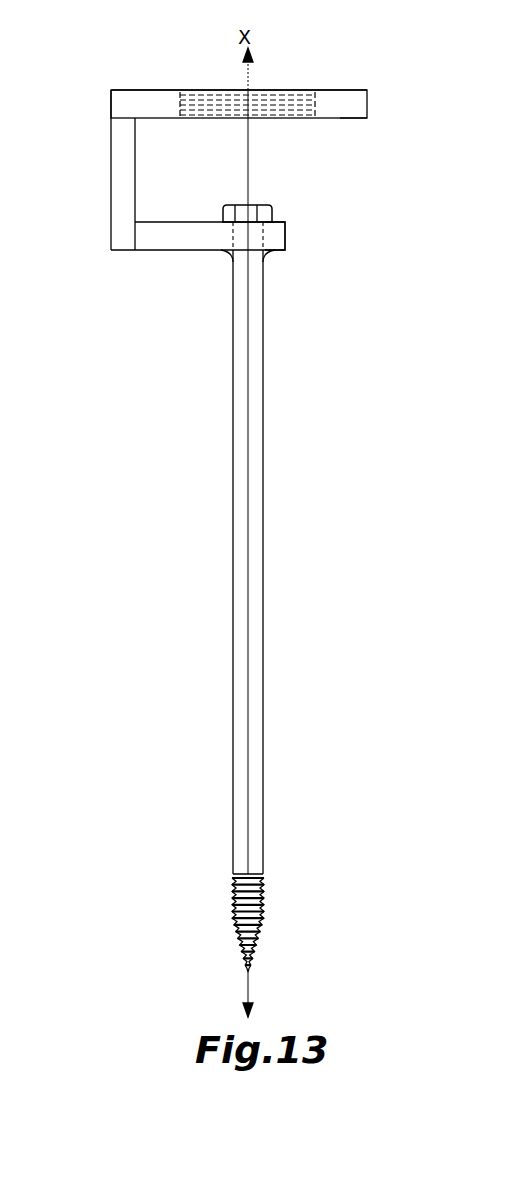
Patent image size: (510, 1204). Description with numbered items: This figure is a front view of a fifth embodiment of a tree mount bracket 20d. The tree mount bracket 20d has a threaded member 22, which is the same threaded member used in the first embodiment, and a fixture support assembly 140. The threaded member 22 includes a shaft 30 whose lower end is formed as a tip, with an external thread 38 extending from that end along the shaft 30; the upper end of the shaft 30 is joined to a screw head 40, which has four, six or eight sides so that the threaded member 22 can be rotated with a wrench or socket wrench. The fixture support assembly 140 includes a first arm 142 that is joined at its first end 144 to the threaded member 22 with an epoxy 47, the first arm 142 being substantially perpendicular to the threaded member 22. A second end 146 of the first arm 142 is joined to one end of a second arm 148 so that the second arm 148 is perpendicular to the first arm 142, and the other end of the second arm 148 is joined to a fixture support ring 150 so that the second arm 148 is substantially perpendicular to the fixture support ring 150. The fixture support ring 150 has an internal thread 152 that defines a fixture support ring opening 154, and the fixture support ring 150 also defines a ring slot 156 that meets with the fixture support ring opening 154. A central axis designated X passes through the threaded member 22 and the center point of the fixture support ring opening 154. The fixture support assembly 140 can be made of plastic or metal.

The tree mount bracket 20d is at (368, 180).
The fixture support assembly 140 is at (352, 80).
The fixture support ring 150 is at (148, 103).
The internal thread 152 is at (280, 98).
The fixture support ring opening 154 is at (222, 90).
The ring slot 156 is at (340, 120).
The second arm 148 is at (120, 153).
The second end 146 is at (156, 243).
The first arm 142 is at (192, 240).
The first end 144 is at (278, 236).
The screw head 40 is at (242, 210).
The epoxy 47 is at (265, 258).
The threaded member 22 is at (253, 537).
The shaft 30 is at (253, 483).
The external thread 38 is at (263, 911).